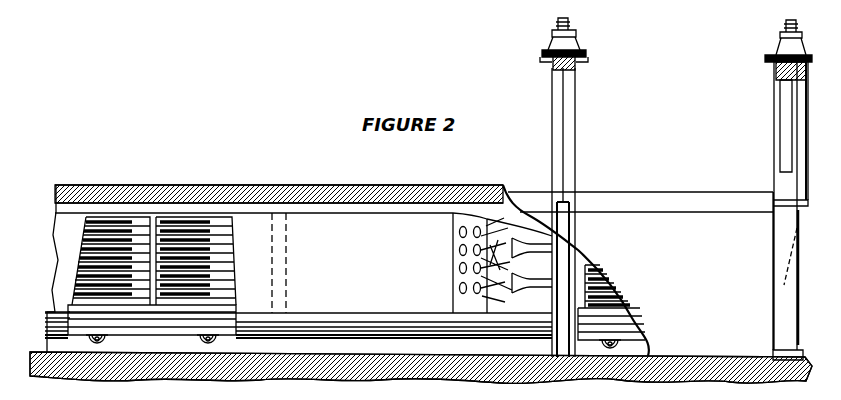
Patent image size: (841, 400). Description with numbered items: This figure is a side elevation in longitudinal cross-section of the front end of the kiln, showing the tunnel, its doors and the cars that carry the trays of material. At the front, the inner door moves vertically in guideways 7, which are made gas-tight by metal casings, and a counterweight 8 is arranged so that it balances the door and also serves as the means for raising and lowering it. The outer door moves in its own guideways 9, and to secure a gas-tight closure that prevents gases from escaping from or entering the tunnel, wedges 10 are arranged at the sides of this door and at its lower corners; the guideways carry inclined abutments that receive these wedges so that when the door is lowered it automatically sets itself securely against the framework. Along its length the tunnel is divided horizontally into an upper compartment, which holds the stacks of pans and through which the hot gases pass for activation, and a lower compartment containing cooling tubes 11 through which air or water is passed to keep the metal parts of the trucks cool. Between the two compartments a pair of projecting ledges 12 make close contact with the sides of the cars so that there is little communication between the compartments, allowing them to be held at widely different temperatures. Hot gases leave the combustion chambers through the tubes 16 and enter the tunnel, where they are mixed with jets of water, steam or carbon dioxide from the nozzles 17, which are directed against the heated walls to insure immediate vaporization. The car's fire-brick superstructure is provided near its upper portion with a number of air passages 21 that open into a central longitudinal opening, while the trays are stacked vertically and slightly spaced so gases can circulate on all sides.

The guideways 7 is at (573, 180).
The counterweight 8 is at (572, 240).
The guideways 9 is at (784, 326).
The wedges 10 is at (785, 276).
The cooling tubes 11 is at (50, 338).
The projecting ledges 12 is at (56, 313).
The tubes 16 is at (459, 288).
The nozzles 17 is at (514, 292).
The air passages 21 is at (240, 303).